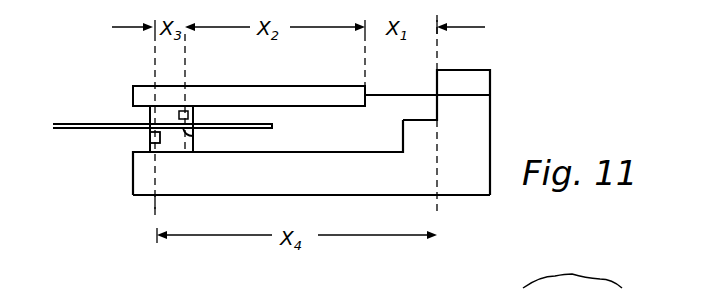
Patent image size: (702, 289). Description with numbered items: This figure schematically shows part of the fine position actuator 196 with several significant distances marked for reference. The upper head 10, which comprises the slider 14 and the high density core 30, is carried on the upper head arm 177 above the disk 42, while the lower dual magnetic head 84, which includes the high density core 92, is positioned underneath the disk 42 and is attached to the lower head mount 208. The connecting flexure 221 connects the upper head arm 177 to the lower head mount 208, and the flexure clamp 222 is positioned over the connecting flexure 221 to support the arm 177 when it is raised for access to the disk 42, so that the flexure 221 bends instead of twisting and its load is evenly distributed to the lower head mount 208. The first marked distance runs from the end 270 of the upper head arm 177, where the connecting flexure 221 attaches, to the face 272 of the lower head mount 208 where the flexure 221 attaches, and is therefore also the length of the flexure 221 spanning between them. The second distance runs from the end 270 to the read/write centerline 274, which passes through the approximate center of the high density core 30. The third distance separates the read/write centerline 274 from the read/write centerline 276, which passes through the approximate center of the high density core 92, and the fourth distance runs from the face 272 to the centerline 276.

The upper magnetic head 10 is at (148, 108).
The slider 14 is at (167, 108).
The high density core 30 is at (193, 136).
The disk 42 is at (272, 127).
The lower dual magnetic head 84 is at (137, 152).
The high density core 92 is at (150, 138).
The upper head arm 177 is at (342, 70).
The fine position actuator 196 is at (447, 205).
The lower head mount 208 is at (338, 197).
The connecting flexure 221 is at (380, 92).
The flexure clamp 222 is at (445, 66).
The end of the upper head arm 270 is at (374, 112).
The face of the lower head mount 272 is at (438, 103).
The read/write centerline 274 is at (188, 62).
The read/write centerline 276 is at (157, 220).